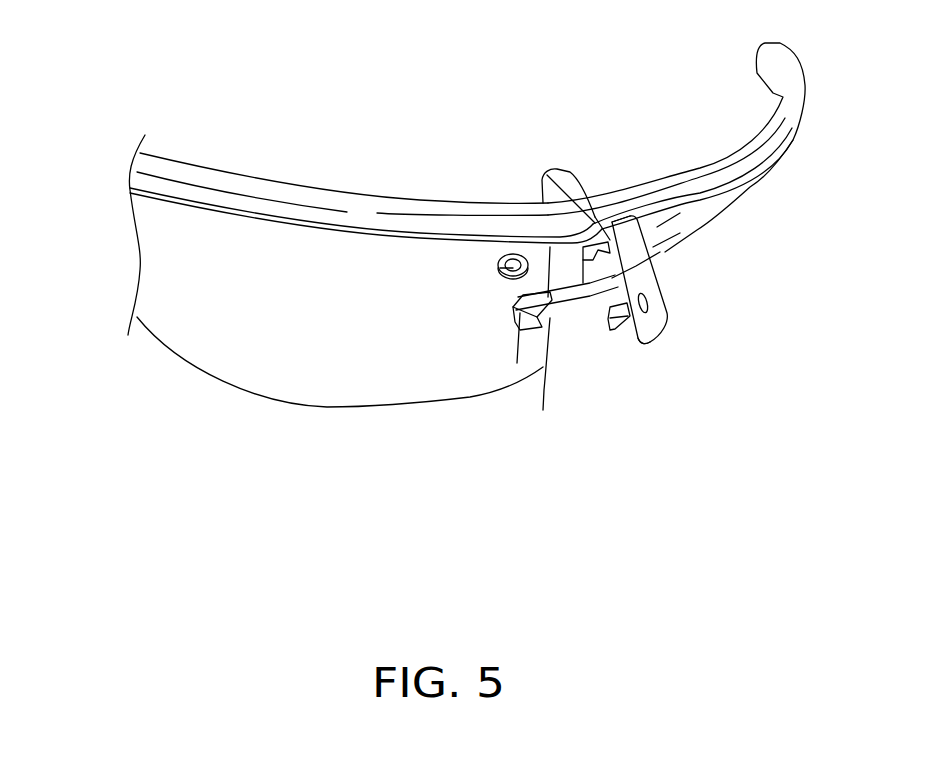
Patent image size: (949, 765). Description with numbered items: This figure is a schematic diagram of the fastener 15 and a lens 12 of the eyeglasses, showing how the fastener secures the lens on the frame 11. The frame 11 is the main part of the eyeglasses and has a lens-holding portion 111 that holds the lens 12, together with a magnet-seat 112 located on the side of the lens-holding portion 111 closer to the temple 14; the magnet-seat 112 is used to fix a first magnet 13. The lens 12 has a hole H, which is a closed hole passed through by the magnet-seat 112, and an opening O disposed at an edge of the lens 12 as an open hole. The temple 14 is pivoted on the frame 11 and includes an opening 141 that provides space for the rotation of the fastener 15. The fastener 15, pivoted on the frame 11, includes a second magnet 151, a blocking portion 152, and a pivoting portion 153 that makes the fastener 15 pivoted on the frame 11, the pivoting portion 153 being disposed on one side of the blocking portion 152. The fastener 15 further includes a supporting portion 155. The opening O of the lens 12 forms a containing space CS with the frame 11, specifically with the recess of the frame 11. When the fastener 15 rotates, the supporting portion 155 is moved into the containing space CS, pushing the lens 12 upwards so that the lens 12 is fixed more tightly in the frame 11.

The frame 11 is at (206, 170).
The lens-holding portion 111 is at (335, 220).
The lens 12 is at (243, 357).
The first magnet 13 is at (498, 268).
The magnet-seat 112 is at (517, 250).
The hole H is at (530, 248).
The temple 14 is at (787, 68).
The opening 141 is at (662, 222).
The fastener 15 is at (660, 287).
The second magnet 151 is at (647, 333).
The blocking portion 152 is at (663, 327).
The pivoting portion 153 is at (640, 250).
The supporting portion 155 is at (611, 330).
The opening O is at (517, 363).
The containing space CS is at (544, 400).